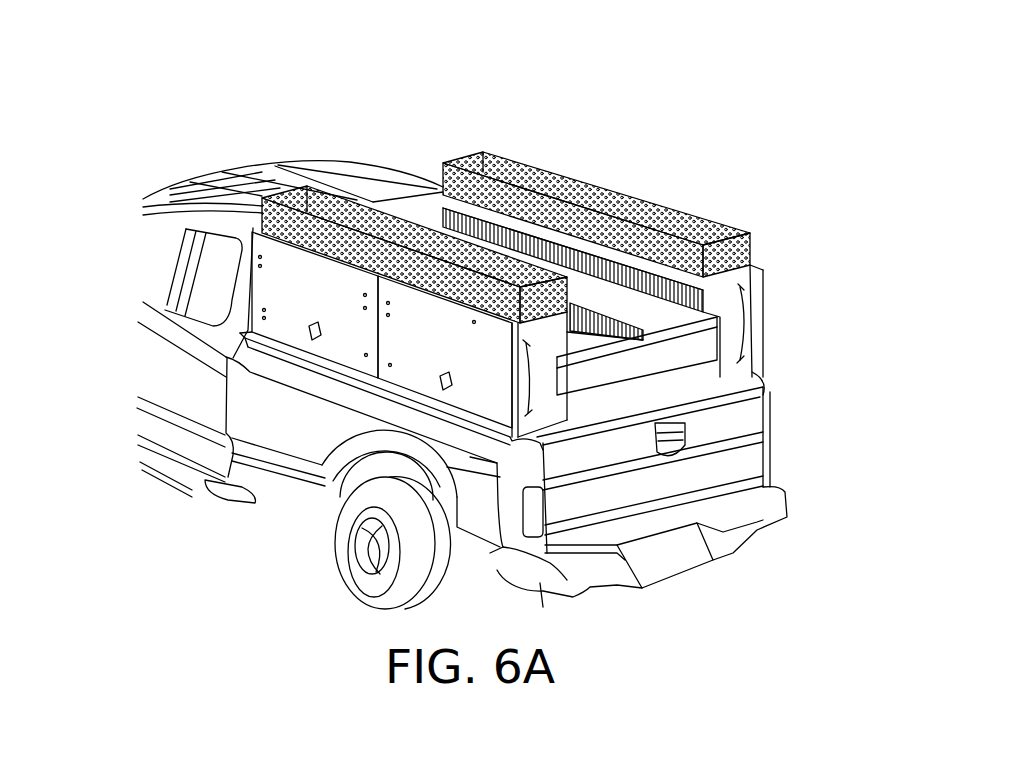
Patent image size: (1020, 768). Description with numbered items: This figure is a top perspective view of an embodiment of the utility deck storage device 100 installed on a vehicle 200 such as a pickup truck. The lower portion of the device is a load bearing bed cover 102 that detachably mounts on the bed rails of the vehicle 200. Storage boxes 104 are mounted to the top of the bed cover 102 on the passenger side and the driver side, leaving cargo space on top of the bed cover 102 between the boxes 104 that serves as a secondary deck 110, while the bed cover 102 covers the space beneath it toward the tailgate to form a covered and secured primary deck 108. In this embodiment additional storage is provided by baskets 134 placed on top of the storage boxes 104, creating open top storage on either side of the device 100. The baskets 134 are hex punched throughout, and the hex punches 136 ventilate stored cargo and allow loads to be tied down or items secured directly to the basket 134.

The utility deck storage device 100 is at (733, 131).
The load bearing bed cover 102 is at (393, 390).
The storage boxes 104 is at (313, 292).
The primary deck 108 is at (712, 438).
The secondary deck 110 is at (650, 308).
The baskets 134 is at (400, 210).
The hex punches 136 is at (637, 193).
The vehicle 200 is at (196, 159).